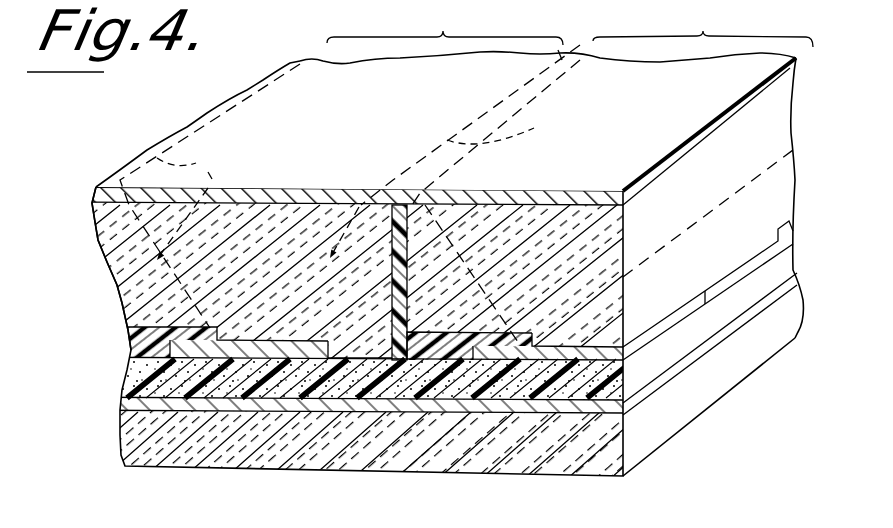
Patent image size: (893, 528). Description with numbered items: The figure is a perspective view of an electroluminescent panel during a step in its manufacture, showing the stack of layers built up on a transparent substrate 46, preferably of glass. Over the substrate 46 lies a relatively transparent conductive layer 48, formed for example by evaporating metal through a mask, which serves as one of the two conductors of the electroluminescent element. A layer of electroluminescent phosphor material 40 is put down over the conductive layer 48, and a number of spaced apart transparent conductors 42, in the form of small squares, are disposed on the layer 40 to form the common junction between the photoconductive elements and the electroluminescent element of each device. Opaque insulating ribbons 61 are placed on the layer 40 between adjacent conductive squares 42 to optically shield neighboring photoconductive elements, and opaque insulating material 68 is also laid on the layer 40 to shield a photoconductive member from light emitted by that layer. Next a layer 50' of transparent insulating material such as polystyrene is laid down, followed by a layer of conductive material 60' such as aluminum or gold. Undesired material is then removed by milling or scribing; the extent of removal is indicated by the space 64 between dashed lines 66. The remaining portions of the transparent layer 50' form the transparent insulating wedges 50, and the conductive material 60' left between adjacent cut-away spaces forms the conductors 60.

The electroluminescent phosphor layer 40 is at (127, 396).
The transparent conductors 42 is at (143, 359).
The transparent substrate 46 is at (137, 438).
The transparent conductive layer 48 is at (625, 415).
The transparent insulating wedges 50 is at (402, 257).
The transparent insulating layer 50' is at (84, 268).
The conductors 60 is at (366, 175).
The conductive material layer 60' is at (198, 124).
The opaque insulating ribbons 61 is at (400, 210).
The space 64 is at (570, 24).
The dashed lines 66 is at (365, 184).
The opaque insulating material 68 is at (130, 333).